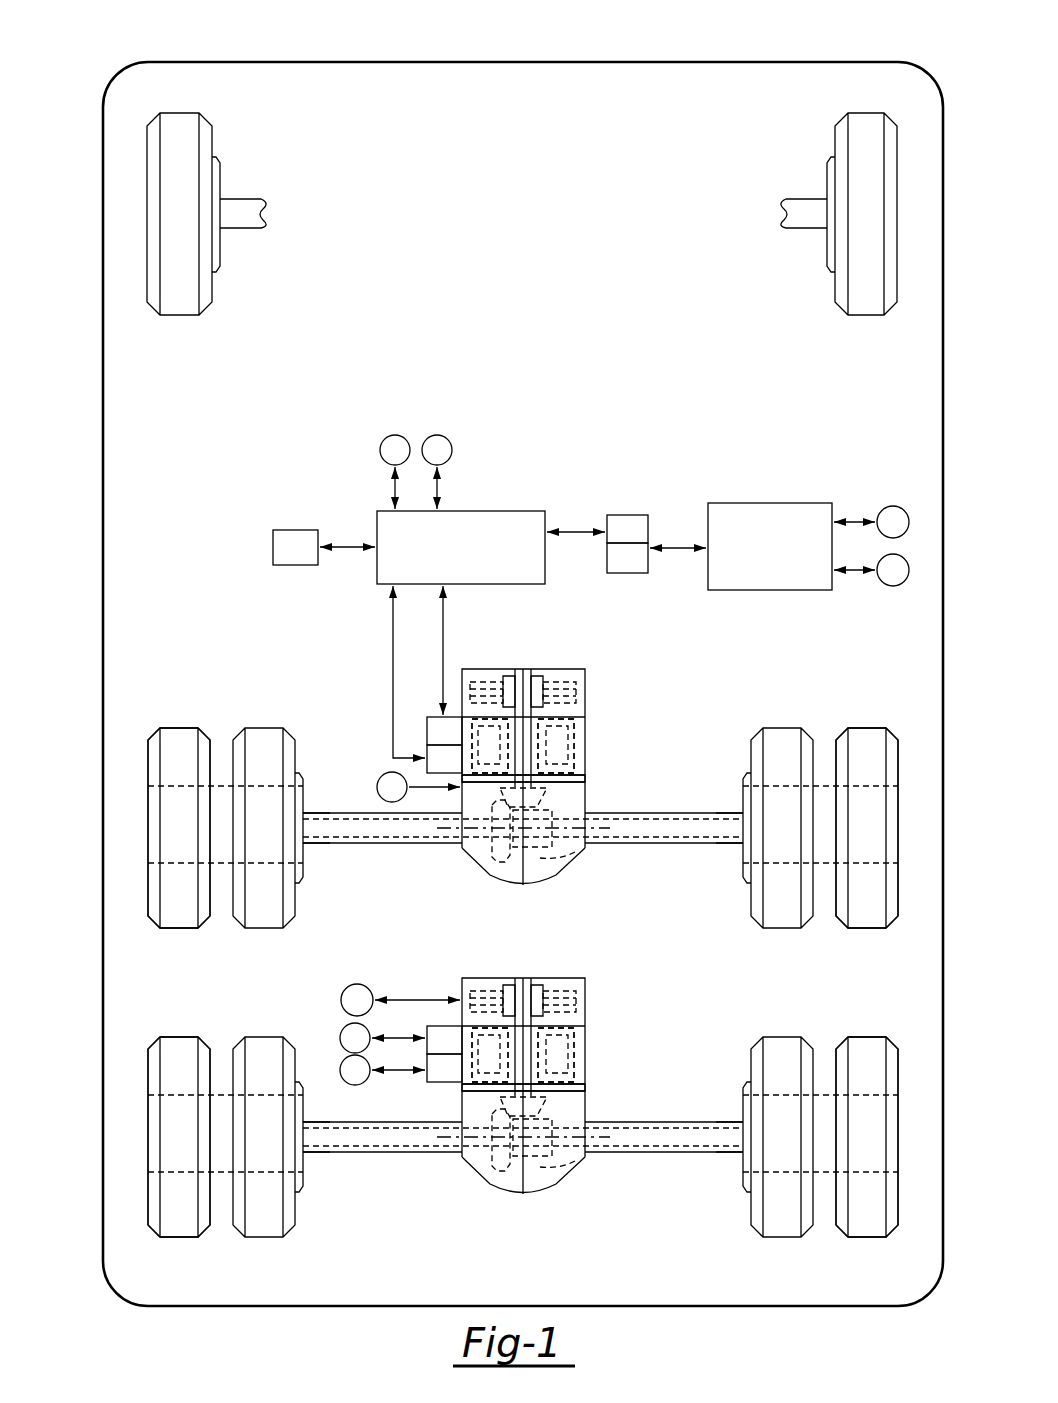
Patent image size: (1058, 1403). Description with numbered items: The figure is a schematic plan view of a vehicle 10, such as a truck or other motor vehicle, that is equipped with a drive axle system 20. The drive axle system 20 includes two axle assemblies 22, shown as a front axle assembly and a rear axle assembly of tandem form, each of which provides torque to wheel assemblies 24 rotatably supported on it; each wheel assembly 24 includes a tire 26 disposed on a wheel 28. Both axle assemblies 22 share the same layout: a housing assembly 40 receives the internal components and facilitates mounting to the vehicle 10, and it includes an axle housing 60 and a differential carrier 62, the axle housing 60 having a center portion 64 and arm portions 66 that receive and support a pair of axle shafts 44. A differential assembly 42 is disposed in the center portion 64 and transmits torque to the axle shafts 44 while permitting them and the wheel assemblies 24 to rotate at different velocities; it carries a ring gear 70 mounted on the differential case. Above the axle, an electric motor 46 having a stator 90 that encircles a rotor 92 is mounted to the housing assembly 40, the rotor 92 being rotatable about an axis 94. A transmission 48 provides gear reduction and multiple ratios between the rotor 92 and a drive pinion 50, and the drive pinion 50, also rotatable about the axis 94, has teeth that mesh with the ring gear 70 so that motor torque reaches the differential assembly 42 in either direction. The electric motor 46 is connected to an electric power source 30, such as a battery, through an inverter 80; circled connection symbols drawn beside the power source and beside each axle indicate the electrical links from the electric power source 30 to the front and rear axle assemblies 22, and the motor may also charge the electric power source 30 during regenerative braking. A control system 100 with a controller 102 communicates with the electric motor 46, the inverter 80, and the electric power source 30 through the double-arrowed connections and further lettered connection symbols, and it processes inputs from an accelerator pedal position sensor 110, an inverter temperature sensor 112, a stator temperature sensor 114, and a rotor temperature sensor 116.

The vehicle 10 is at (568, 58).
The drive axle system 20 is at (273, 612).
The axle assembly 22 is at (130, 795).
The wheel assembly 24 is at (260, 1030).
The tire 26 is at (264, 727).
The wheel 28 is at (177, 862).
The electric power source 30 is at (808, 546).
The housing assembly 40 is at (551, 655).
The differential assembly 42 is at (550, 850).
The axle shaft 44 is at (350, 847).
The electric motor 46 is at (592, 716).
The transmission 48 is at (592, 668).
The drive pinion 50 is at (543, 800).
The axle housing 60 is at (501, 1003).
The differential carrier 62 is at (586, 780).
The center portion 64 is at (505, 880).
The arm portion 66 is at (330, 847).
The ring gear 70 is at (490, 855).
The inverter 80 is at (656, 558).
The stator 90 is at (577, 754).
The rotor 92 is at (566, 740).
The axis 94 is at (565, 878).
The control system 100 is at (567, 430).
The controller 102 is at (461, 634).
The accelerator pedal position sensor 110 is at (324, 547).
The inverter temperature sensor 112 is at (597, 529).
The stator temperature sensor 114 is at (444, 913).
The rotor temperature sensor 116 is at (444, 885).